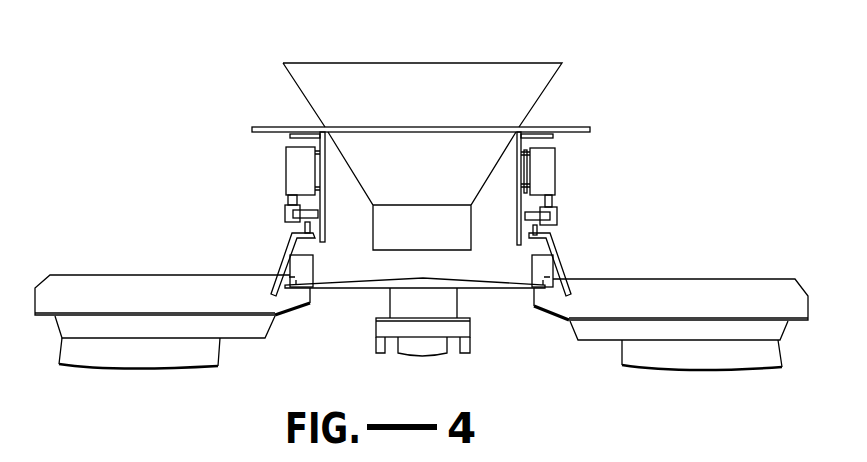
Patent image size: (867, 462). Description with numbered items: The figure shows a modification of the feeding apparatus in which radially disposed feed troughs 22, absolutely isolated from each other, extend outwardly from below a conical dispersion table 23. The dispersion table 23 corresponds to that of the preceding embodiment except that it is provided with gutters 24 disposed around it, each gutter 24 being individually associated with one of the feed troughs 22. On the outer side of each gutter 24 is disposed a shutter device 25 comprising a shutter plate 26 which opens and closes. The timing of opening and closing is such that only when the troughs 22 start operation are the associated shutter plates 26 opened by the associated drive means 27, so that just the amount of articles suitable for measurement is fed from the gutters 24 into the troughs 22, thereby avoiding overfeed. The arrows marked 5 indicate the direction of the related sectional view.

The section line 5-5 arrows 5 is at (50, 262).
The feed trough 22 is at (157, 305).
The conical dispersion table 23 is at (475, 284).
The gutter 24 is at (503, 63).
The shutter device 25 is at (262, 214).
The shutter plate 26 is at (285, 266).
The drive means 27 is at (286, 162).